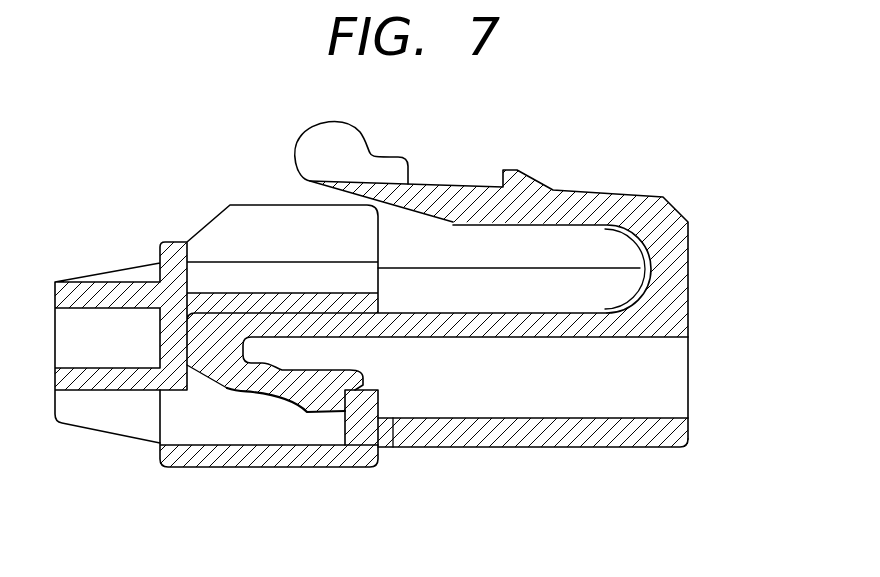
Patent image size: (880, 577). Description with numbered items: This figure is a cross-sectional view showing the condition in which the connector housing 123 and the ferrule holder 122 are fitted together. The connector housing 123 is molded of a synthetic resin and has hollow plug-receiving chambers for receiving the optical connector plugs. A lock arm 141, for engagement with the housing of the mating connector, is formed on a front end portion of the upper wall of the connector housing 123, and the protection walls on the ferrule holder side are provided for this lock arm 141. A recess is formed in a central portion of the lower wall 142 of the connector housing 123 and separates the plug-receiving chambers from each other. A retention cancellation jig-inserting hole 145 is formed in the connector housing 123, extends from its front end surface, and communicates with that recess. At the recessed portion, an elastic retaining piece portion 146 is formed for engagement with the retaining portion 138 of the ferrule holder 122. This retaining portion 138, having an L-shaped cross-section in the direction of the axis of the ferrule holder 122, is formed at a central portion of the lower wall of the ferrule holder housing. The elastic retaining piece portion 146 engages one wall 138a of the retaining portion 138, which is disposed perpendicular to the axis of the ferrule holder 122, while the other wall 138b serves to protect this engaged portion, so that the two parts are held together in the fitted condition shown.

The ferrule holder 122 is at (167, 227).
The connector housing 123 is at (643, 182).
The retaining portion 138 is at (348, 468).
The one wall of the retaining portion 138a is at (380, 450).
The other wall of the retaining portion 138b is at (188, 468).
The lock arm 141 is at (442, 186).
The lower wall 142 is at (587, 438).
The retention cancellation jig-inserting hole 145 is at (673, 395).
The elastic retaining piece portion 146 is at (306, 411).